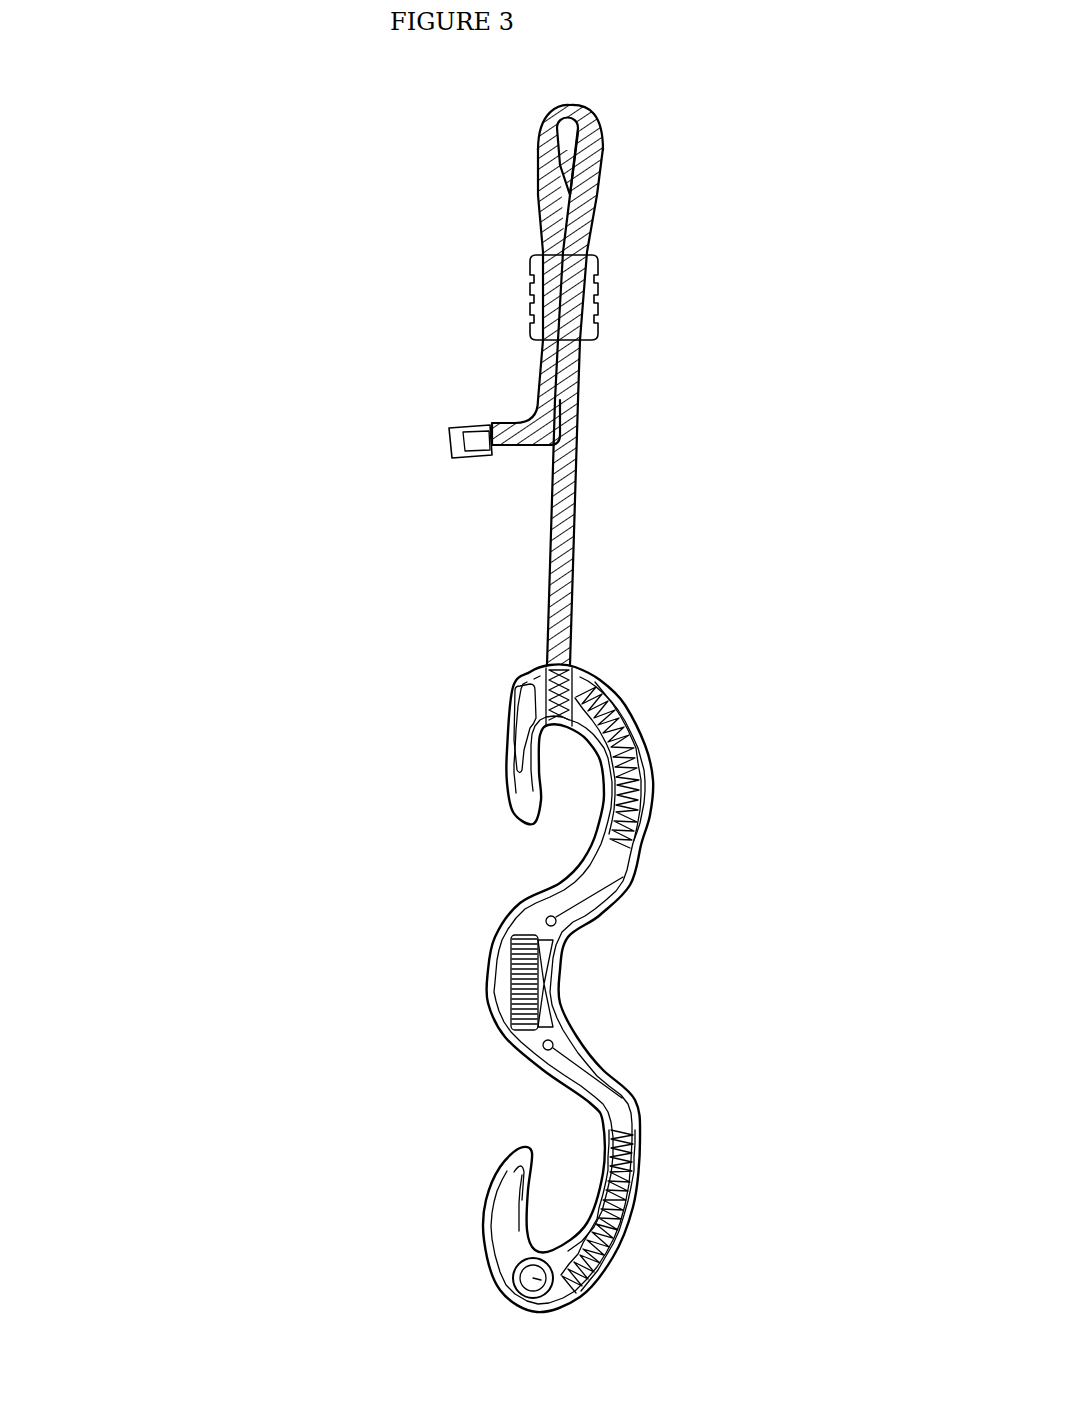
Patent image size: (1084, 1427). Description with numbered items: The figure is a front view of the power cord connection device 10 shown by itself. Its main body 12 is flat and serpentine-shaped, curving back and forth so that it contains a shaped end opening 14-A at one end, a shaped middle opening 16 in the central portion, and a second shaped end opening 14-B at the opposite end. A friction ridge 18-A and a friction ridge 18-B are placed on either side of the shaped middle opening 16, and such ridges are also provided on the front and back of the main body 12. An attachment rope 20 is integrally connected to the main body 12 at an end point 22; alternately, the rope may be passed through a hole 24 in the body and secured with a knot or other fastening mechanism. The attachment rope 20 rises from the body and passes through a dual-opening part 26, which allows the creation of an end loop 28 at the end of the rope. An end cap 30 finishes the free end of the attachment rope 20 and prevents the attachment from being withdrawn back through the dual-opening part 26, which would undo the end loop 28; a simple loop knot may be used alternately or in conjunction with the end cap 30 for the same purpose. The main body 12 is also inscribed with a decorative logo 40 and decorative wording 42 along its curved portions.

The power cord connection device 10 is at (207, 181).
The main body 12 is at (523, 902).
The shaped end opening 14-A is at (573, 779).
The shaped end opening 14-B is at (552, 1133).
The shaped middle opening 16 is at (588, 972).
The friction ridge 18-A is at (643, 878).
The friction ridge 18-B is at (593, 1065).
The attachment rope 20 is at (580, 447).
The end point 22 is at (573, 657).
The hole 24 is at (580, 1290).
The dual-opening part 26 is at (597, 291).
The end loop 28 is at (567, 157).
The end cap 30 is at (445, 448).
The decorative logo 40 is at (510, 987).
The decorative wording 42 is at (643, 763).